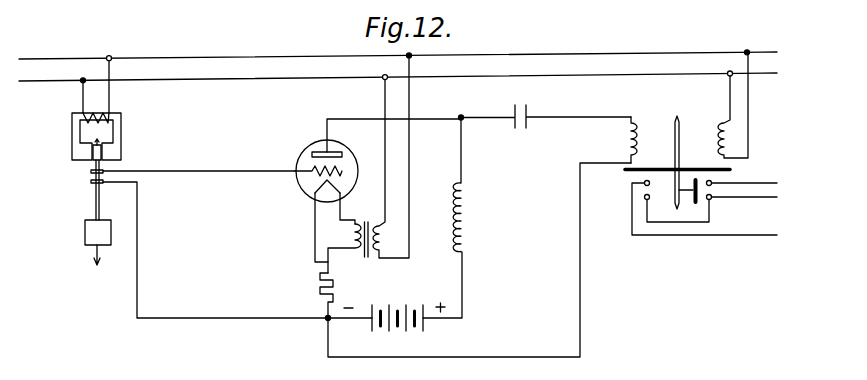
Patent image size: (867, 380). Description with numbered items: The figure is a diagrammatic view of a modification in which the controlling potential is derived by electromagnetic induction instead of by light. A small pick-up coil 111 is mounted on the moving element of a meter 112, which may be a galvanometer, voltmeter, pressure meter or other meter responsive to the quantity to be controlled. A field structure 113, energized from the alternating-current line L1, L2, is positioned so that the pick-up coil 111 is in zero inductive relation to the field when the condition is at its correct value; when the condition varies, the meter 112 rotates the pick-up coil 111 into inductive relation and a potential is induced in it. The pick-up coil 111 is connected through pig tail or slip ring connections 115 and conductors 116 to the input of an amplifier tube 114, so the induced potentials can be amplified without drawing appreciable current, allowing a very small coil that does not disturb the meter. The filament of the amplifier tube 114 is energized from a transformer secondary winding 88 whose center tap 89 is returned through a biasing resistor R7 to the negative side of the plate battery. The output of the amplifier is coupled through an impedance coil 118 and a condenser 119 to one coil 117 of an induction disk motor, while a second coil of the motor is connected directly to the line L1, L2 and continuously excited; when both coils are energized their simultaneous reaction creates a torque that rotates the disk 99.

The A. C. line L1 is at (190, 58).
The A. C. line L2 is at (190, 80).
The field structure 113 is at (72, 127).
The pick-up coil 111 is at (93, 161).
The pig tail or slip ring connections 115 is at (91, 179).
The meter 112 is at (85, 235).
The conductors 116 is at (200, 172).
The amplifier tube 114 is at (305, 152).
The transformer secondary winding 88 is at (357, 222).
The center tap 89 is at (345, 239).
The biasing resistor R7 is at (337, 292).
The impedance coil 118 is at (466, 216).
The condenser 119 is at (517, 128).
The coil of induction disk motor 117 is at (637, 128).
The disk 99 is at (643, 164).